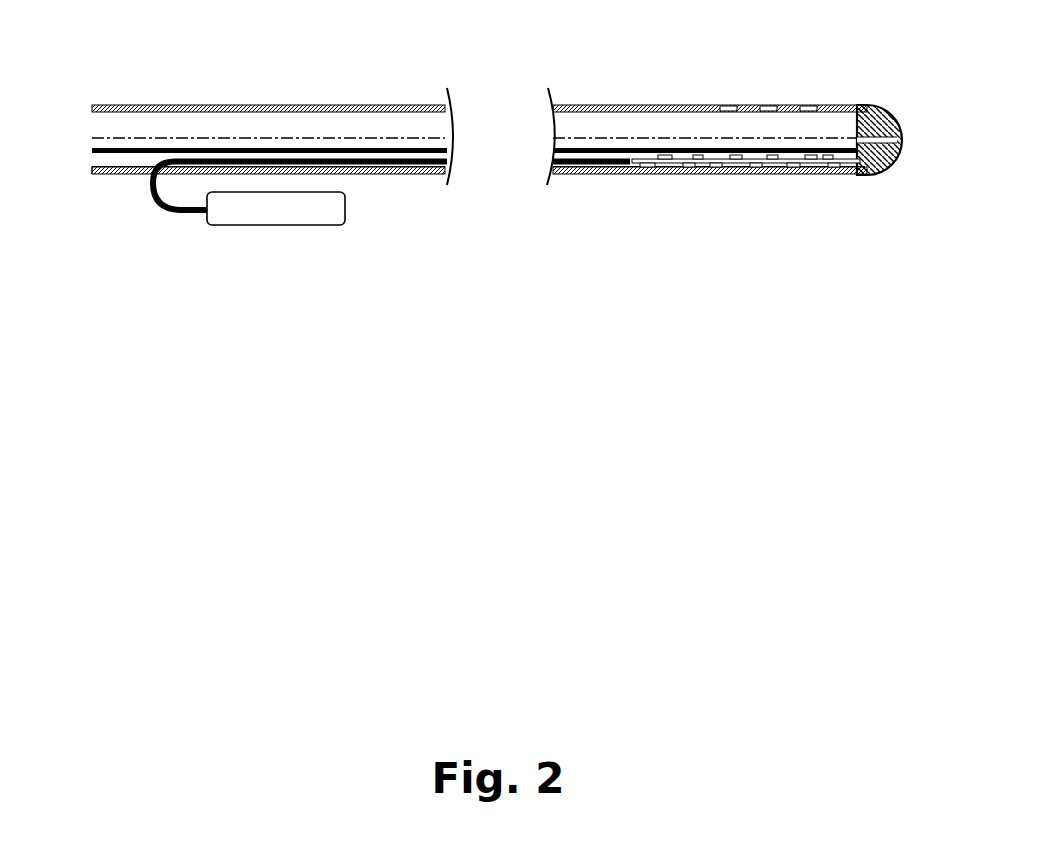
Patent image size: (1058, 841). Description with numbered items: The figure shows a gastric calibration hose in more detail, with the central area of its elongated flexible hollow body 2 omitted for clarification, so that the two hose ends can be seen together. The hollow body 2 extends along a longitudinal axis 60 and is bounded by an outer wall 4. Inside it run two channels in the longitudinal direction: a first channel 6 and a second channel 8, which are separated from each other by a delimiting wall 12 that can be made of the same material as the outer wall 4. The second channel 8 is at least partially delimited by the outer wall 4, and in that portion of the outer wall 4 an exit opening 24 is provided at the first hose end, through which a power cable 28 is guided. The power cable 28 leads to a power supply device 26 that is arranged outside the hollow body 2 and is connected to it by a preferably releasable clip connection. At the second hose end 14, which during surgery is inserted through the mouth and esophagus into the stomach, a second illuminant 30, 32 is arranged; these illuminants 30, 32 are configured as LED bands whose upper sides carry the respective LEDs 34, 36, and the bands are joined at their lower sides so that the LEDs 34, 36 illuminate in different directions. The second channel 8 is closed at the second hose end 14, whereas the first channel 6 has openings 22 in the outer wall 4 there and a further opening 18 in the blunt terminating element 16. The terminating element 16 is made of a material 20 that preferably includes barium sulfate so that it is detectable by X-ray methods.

The elongated flexible hollow body 2 is at (538, 190).
The outer wall 4 is at (402, 108).
The first channel 6 is at (108, 127).
The second channel 8 is at (108, 162).
The delimiting wall 12 is at (350, 148).
The second hose end 14 is at (877, 217).
The terminating element 16 is at (900, 167).
The opening 18 is at (900, 137).
The material 20 is at (883, 110).
The openings 22 is at (732, 108).
The exit opening 24 is at (150, 170).
The power supply device 26 is at (268, 207).
The power cable 28 is at (193, 212).
The illuminant 30 is at (663, 162).
The illuminant 32 is at (750, 159).
The LEDs 34 is at (678, 163).
The LEDs 36 is at (777, 162).
The longitudinal axis 60 is at (442, 137).